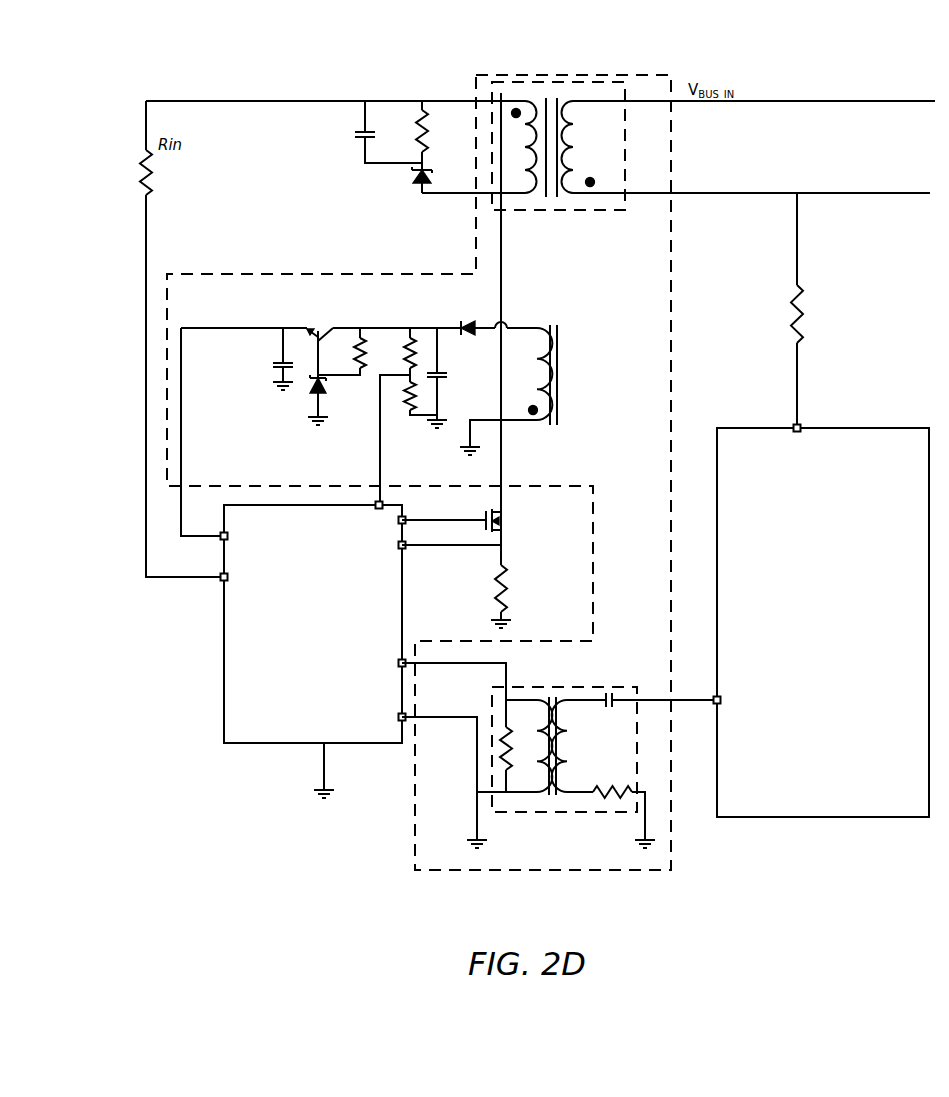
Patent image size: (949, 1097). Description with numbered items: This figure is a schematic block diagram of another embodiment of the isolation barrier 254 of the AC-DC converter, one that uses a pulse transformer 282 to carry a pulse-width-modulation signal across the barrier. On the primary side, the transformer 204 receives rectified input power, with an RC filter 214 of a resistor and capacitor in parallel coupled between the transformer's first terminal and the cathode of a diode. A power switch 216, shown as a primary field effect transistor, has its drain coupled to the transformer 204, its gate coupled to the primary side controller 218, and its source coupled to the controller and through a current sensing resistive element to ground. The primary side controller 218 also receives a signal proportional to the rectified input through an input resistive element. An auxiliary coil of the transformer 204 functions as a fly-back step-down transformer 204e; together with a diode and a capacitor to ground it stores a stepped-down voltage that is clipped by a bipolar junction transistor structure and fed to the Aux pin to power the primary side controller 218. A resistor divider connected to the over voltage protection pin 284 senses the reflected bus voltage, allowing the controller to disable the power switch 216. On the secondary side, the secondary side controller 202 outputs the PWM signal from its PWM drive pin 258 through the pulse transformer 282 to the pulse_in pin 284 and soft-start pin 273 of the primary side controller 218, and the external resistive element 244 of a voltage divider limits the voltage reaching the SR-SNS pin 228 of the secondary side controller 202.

The RC filter 214 is at (394, 88).
The transformer 204 is at (500, 93).
The isolation barrier 254 is at (419, 472).
The external resistive element 244 is at (800, 290).
The SR-SNS pin 228 is at (803, 426).
The fly-back step-down transformer 204e is at (533, 437).
The pulse_in pin 284 is at (377, 509).
The power switch 216 is at (512, 532).
The primary side controller 218 is at (359, 551).
The pulse transformer 282 is at (563, 684).
The PWM drive pin 258 is at (712, 698).
The soft-start pin 273 is at (395, 717).
The secondary side controller 202 is at (822, 622).